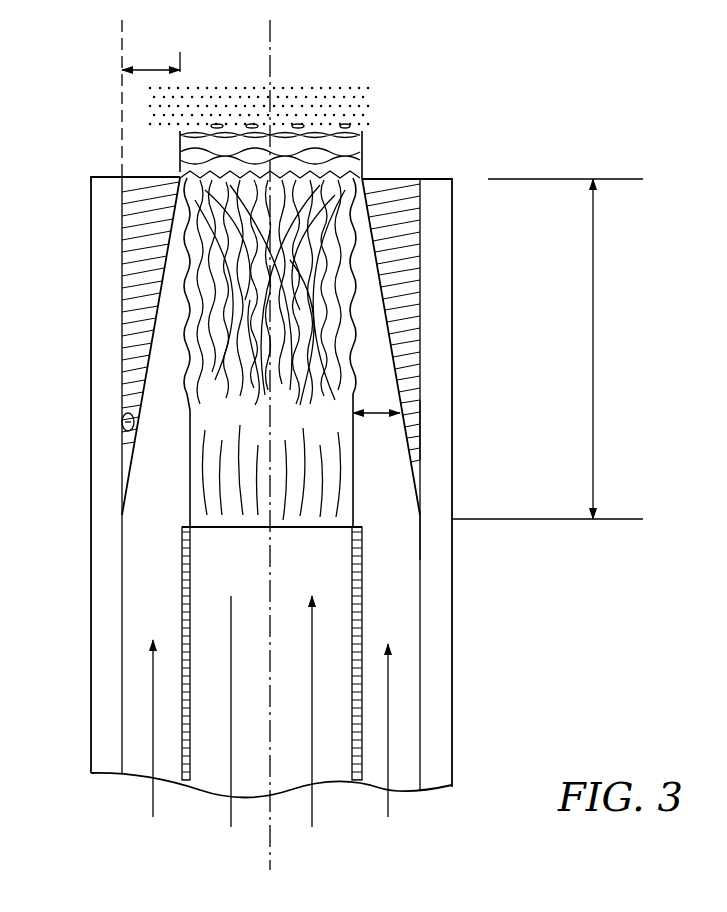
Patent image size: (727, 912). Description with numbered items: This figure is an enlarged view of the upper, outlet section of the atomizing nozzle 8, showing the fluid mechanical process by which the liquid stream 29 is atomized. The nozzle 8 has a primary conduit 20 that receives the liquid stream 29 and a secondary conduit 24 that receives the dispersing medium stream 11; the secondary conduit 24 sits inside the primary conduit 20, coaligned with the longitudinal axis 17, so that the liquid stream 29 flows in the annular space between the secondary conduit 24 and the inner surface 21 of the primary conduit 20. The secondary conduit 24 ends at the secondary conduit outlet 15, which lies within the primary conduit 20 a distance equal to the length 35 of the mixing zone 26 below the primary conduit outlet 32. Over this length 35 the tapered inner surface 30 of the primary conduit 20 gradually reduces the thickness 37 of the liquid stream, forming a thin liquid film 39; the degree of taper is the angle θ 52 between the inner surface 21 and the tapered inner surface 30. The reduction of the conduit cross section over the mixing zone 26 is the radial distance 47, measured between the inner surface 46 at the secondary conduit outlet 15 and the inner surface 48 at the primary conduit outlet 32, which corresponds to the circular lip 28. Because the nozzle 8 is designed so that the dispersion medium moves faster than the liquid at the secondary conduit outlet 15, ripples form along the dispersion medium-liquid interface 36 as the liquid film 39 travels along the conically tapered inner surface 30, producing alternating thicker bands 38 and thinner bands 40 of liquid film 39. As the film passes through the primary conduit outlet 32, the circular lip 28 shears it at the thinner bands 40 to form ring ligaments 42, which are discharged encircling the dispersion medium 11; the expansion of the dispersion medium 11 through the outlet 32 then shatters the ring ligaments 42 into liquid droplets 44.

The atomizing nozzle 8 is at (550, 684).
The dispersing medium stream 11 is at (312, 815).
The secondary conduit outlet 15 is at (217, 527).
The longitudinal axis 17 is at (270, 858).
The primary conduit 20 is at (91, 720).
The inner surface 21 is at (124, 643).
The secondary conduit 24 is at (182, 570).
The mixing zone 26 is at (168, 360).
The circular lip 28 is at (363, 178).
The liquid stream 29 is at (388, 815).
The tapered inner surface 30 is at (170, 286).
The primary conduit outlet 32 is at (222, 177).
The length of the mixing zone 35 is at (593, 314).
The dispersion medium-liquid interface 36 is at (358, 310).
The thickness of the liquid stream 37 is at (378, 416).
The thicker bands 38 is at (365, 262).
The liquid film 39 is at (388, 429).
The thinner bands 40 is at (360, 226).
The ring ligaments 42 is at (363, 150).
The liquid droplets 44 is at (368, 108).
The inner surface of the primary conduit at the secondary conduit outlet 46 is at (413, 522).
The radial distance 47 is at (152, 68).
The inner surface at the primary conduit outlet 48 is at (180, 178).
The angle θ 52 is at (124, 433).